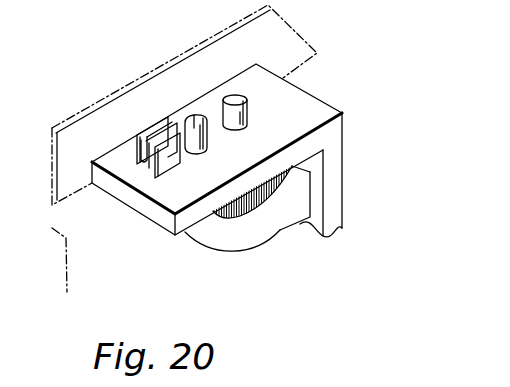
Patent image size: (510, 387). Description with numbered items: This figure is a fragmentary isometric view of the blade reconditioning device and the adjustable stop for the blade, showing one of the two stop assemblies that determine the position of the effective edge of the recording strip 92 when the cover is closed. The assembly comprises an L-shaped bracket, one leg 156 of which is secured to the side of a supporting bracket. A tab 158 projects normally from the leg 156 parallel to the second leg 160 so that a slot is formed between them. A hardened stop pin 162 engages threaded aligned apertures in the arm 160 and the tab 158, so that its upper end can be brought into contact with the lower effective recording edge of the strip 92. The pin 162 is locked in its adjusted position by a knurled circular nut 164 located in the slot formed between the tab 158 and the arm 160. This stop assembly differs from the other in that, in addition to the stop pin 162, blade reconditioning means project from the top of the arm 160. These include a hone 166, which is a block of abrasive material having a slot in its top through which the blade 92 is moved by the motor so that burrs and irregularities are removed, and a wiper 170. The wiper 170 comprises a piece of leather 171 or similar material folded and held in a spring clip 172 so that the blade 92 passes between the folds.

The recording strip 92 is at (172, 72).
The leg 156 is at (342, 188).
The tab 158 is at (270, 231).
The second leg 160 is at (236, 190).
The stop pin 162 is at (247, 117).
The knurled circular nut 164 is at (228, 214).
The hone 166 is at (193, 113).
The wiper 170 is at (119, 185).
The piece of leather 171 is at (134, 166).
The spring clip 172 is at (156, 166).